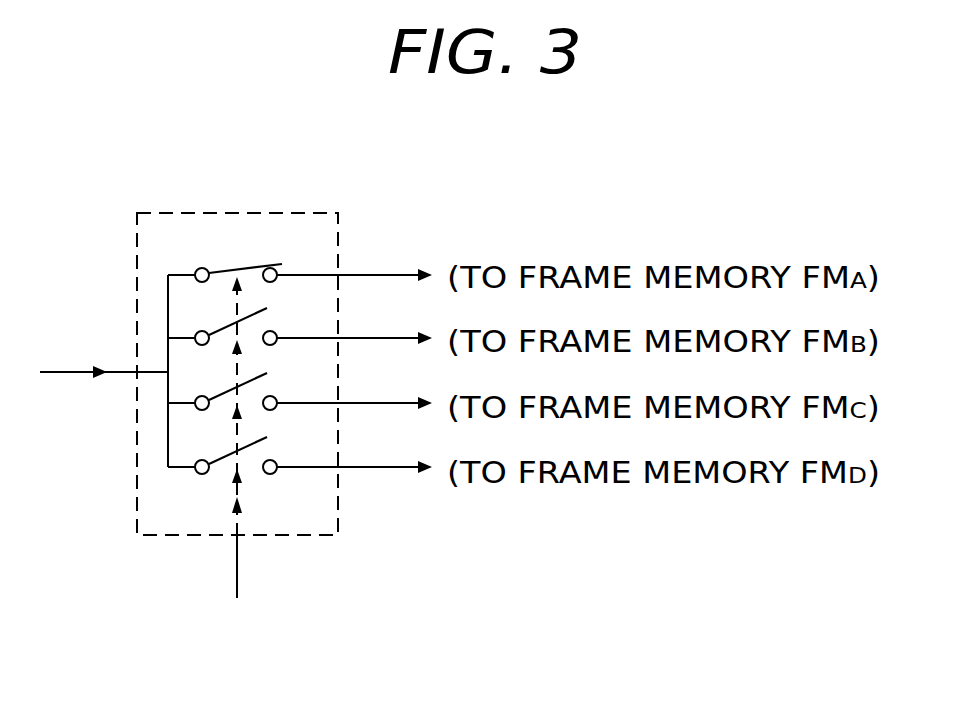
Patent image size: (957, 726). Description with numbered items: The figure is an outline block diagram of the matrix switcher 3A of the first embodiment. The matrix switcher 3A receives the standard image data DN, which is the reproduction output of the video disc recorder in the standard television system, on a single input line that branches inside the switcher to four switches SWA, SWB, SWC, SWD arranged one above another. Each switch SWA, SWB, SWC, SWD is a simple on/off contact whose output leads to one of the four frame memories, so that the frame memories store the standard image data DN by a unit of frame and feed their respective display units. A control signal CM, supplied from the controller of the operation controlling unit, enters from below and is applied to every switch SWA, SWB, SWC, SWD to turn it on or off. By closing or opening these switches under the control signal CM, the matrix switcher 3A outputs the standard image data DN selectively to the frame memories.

The matrix switcher 3A is at (367, 702).
The switch SW_A SWA is at (252, 266).
The switch SW_B SWB is at (263, 309).
The switch SW_C SWC is at (263, 374).
The switch SW_D SWD is at (263, 438).
The standard image data DN is at (70, 373).
The control signal CM is at (238, 570).